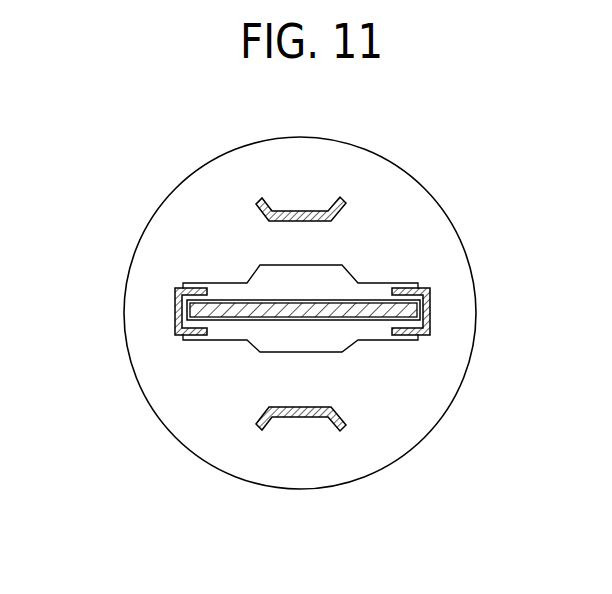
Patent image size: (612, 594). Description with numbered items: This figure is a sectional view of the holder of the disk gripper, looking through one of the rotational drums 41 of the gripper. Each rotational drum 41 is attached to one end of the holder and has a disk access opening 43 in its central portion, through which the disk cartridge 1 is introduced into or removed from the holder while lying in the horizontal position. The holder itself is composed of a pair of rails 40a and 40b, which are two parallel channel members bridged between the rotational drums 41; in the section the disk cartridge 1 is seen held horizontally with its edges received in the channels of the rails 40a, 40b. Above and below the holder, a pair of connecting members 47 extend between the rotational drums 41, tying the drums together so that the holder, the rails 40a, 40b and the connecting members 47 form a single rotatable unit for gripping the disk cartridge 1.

The disk cartridge 1 is at (232, 321).
The rotational drum 41 is at (418, 184).
The disk access opening 43 is at (337, 352).
The rail 40a is at (175, 295).
The rail 40b is at (427, 287).
The connecting member 47 is at (305, 207).